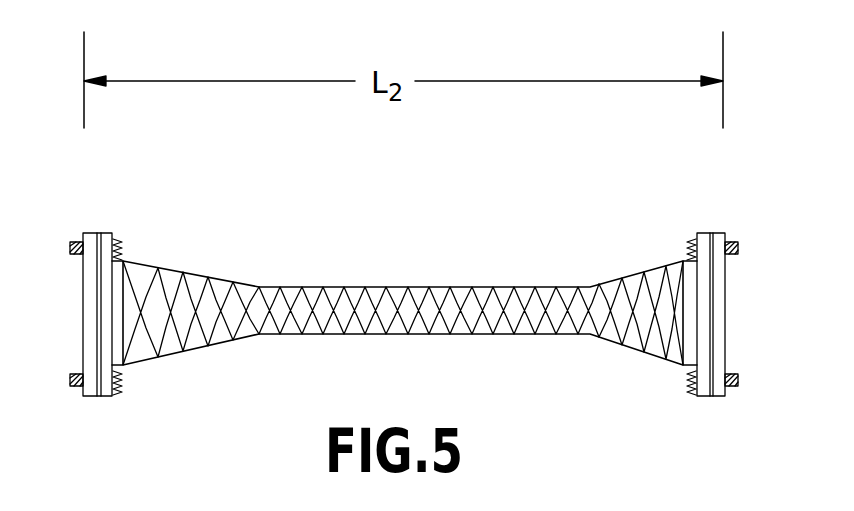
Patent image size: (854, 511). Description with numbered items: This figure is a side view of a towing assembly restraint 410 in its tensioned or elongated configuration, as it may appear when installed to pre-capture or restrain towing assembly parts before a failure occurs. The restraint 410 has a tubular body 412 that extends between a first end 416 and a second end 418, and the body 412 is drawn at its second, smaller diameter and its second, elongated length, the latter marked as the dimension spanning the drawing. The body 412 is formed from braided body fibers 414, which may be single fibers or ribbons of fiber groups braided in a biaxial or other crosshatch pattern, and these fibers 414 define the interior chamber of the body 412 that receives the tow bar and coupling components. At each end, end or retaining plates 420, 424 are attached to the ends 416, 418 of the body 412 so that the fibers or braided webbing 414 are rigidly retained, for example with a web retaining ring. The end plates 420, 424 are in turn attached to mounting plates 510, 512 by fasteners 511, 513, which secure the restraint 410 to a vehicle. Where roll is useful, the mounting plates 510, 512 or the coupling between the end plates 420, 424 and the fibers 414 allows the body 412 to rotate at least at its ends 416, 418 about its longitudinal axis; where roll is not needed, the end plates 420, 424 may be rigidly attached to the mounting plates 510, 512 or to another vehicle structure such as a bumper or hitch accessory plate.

The towing assembly restraint 410 is at (396, 313).
The tubular body 412 is at (404, 268).
The body fibers 414 is at (429, 263).
The first end 416 is at (190, 268).
The second end 418 is at (641, 273).
The end plate 420 is at (96, 266).
The end plate 424 is at (716, 265).
The mounting plate 510 is at (734, 365).
The fastener 511 is at (668, 359).
The mounting plate 512 is at (60, 366).
The fastener 513 is at (138, 362).